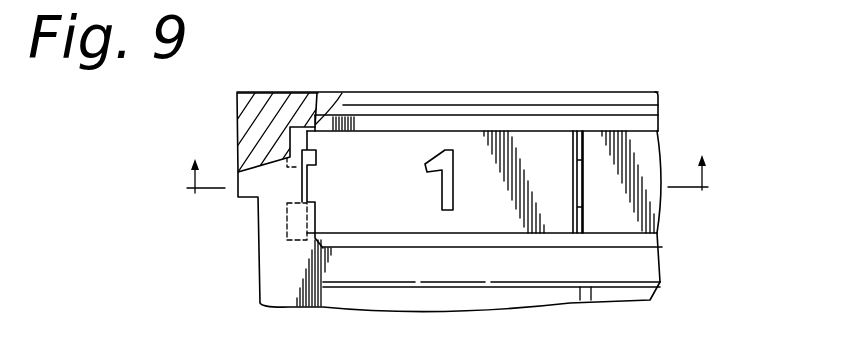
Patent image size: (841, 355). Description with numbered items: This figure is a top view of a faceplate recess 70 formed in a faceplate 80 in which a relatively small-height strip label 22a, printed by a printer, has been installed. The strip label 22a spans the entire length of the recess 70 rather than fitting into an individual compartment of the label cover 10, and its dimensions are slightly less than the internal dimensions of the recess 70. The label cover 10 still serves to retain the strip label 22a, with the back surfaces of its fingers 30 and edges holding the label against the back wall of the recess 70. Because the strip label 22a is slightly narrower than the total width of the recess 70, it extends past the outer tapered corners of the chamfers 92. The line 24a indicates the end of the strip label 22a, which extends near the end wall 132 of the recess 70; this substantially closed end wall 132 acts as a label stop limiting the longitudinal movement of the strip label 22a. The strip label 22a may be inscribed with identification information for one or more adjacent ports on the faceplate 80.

The label cover 10 is at (451, 162).
The strip label 22a is at (643, 138).
The line indicating the end of the strip label 24a is at (302, 190).
The fingers 30 is at (575, 128).
The faceplate recess 70 is at (317, 93).
The faceplate 80 is at (268, 110).
The chamfers 92 is at (342, 93).
The end wall of the recess 132 is at (313, 176).